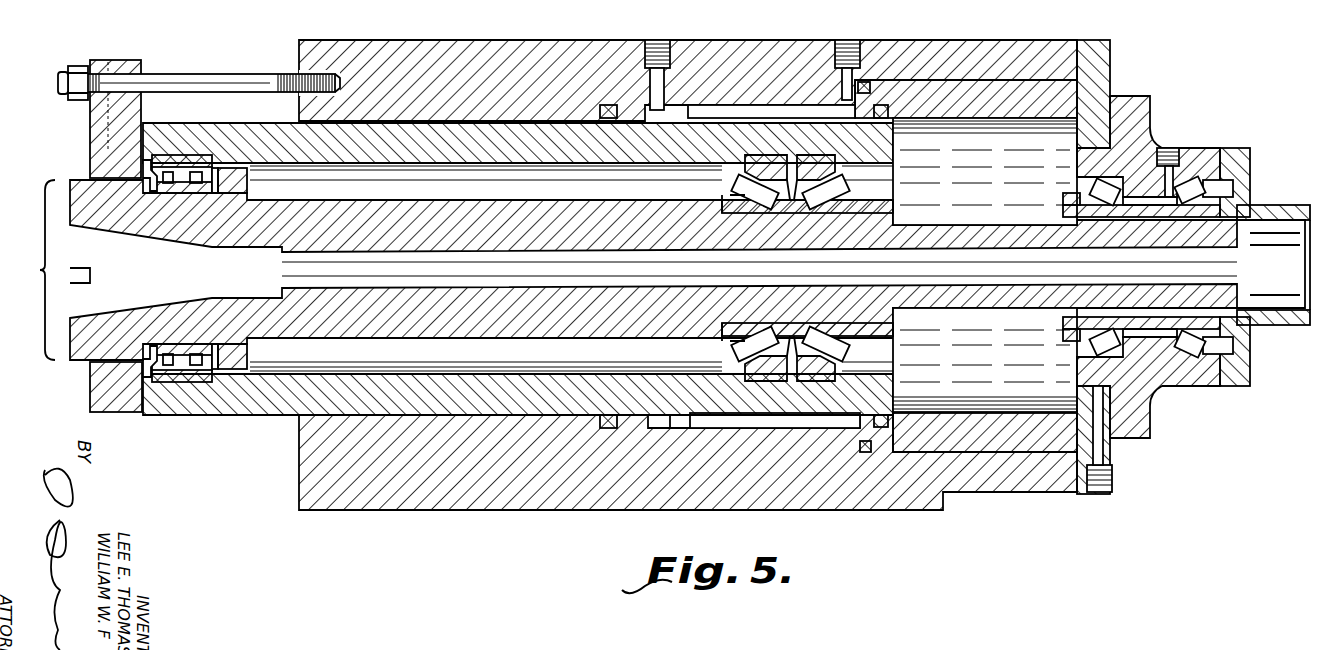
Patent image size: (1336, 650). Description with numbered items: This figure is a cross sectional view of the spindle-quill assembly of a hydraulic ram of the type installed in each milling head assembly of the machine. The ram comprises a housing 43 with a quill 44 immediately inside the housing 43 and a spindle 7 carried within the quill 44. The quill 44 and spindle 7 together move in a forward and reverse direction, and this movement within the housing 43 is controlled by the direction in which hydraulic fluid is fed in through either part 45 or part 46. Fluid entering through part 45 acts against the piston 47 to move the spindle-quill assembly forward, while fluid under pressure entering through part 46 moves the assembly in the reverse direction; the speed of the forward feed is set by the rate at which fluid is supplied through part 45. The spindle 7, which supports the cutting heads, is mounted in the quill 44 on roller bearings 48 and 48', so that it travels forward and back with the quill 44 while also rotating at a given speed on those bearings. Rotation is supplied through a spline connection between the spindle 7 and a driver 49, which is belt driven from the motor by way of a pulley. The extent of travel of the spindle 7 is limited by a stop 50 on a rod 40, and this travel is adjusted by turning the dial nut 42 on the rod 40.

The spindle 7 is at (662, 270).
The rod 40 is at (235, 77).
The dial nut 42 is at (82, 66).
The housing 43 is at (483, 44).
The quill 44 is at (382, 127).
The part 45 is at (849, 40).
The part 46 is at (660, 40).
The piston 47 is at (688, 104).
The roller bearing 48 is at (807, 266).
The roller bearing 48' is at (1145, 266).
The driver 49 is at (1313, 262).
The stop 50 is at (133, 60).